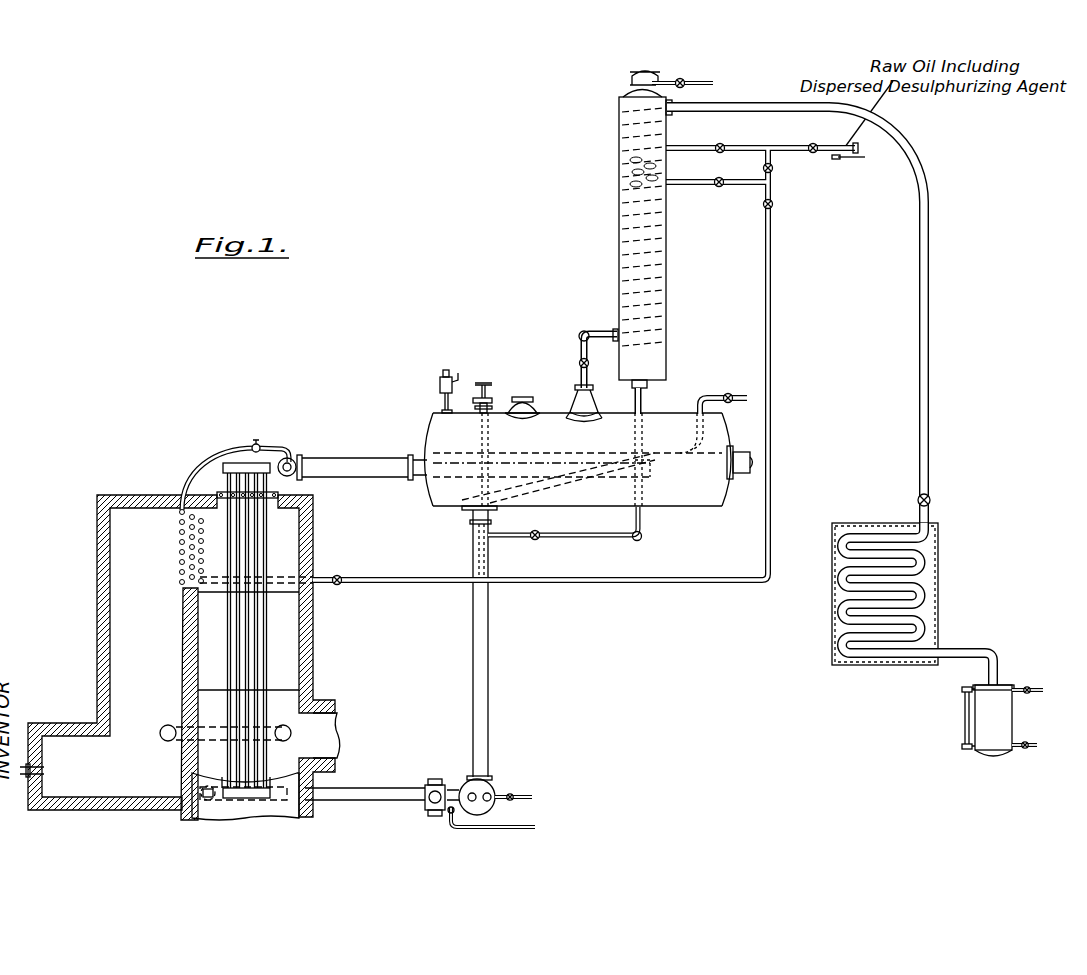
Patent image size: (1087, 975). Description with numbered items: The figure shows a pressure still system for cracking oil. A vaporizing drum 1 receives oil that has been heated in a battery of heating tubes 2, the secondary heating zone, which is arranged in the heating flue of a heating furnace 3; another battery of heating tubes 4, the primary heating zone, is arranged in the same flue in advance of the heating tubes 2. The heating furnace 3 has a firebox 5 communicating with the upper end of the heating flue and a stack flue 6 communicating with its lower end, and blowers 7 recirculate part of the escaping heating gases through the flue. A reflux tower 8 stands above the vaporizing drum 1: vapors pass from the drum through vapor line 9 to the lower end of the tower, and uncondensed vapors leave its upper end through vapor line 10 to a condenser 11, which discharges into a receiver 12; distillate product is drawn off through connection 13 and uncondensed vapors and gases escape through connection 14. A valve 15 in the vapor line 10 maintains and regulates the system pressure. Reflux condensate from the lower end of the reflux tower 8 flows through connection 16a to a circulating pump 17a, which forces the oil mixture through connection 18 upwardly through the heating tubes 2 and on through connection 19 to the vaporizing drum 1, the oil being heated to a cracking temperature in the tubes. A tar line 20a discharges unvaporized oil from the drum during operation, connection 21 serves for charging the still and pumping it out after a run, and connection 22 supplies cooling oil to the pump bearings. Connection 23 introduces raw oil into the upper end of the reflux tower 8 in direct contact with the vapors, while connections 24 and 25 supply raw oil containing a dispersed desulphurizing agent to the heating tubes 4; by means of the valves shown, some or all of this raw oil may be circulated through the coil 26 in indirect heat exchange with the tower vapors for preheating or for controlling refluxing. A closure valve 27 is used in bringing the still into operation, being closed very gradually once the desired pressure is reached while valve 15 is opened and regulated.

The vaporizing drum 1 is at (680, 508).
The battery of heating tubes 2 is at (270, 653).
The heating furnace 3 is at (96, 614).
The battery of heating tubes 4 is at (180, 538).
The firebox 5 is at (57, 745).
The stack flue 6 is at (332, 733).
The blowers 7 is at (165, 727).
The reflux tower 8 is at (619, 238).
The vapor line 9 is at (578, 347).
The vapor line 10 is at (920, 273).
The condenser 11 is at (830, 650).
The receiver 12 is at (983, 751).
The connection 13 is at (1033, 749).
The connection 14 is at (1037, 688).
The valve 15 is at (930, 500).
The connection 16a is at (548, 540).
The circulating pump 17a is at (493, 783).
The connection 18 is at (368, 788).
The connection 19 is at (337, 476).
The tar line 20a is at (737, 395).
The connection 21 is at (527, 822).
The connection 22 is at (538, 795).
The connection 23 is at (708, 82).
The connection 24 is at (795, 151).
The connection 25 is at (388, 583).
The coil 26 is at (627, 175).
The closure valve 27 is at (458, 510).